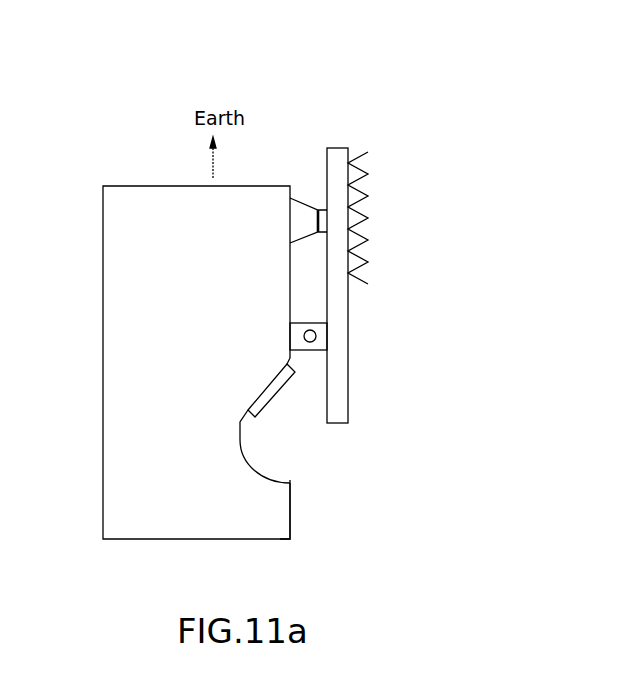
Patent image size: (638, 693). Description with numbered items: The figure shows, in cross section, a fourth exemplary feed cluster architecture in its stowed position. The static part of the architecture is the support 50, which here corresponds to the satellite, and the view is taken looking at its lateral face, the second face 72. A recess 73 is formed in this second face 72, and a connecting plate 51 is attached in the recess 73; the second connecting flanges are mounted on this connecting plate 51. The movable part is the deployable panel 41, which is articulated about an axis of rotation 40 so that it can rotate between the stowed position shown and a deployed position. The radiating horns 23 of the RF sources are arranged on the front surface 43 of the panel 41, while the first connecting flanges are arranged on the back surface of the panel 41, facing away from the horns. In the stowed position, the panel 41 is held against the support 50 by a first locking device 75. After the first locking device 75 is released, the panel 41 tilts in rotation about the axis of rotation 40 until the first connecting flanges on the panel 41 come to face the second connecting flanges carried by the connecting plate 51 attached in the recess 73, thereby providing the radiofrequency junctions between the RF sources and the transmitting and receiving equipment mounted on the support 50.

The support 50 is at (118, 523).
The second face 72 is at (292, 515).
The recess 73 is at (252, 461).
The connecting plate 51 is at (280, 397).
The axis of rotation 40 is at (307, 328).
The first locking device 75 is at (303, 213).
The deployable panel 41 is at (391, 289).
The front surface 43 is at (348, 313).
The radiating horns 23 is at (368, 197).